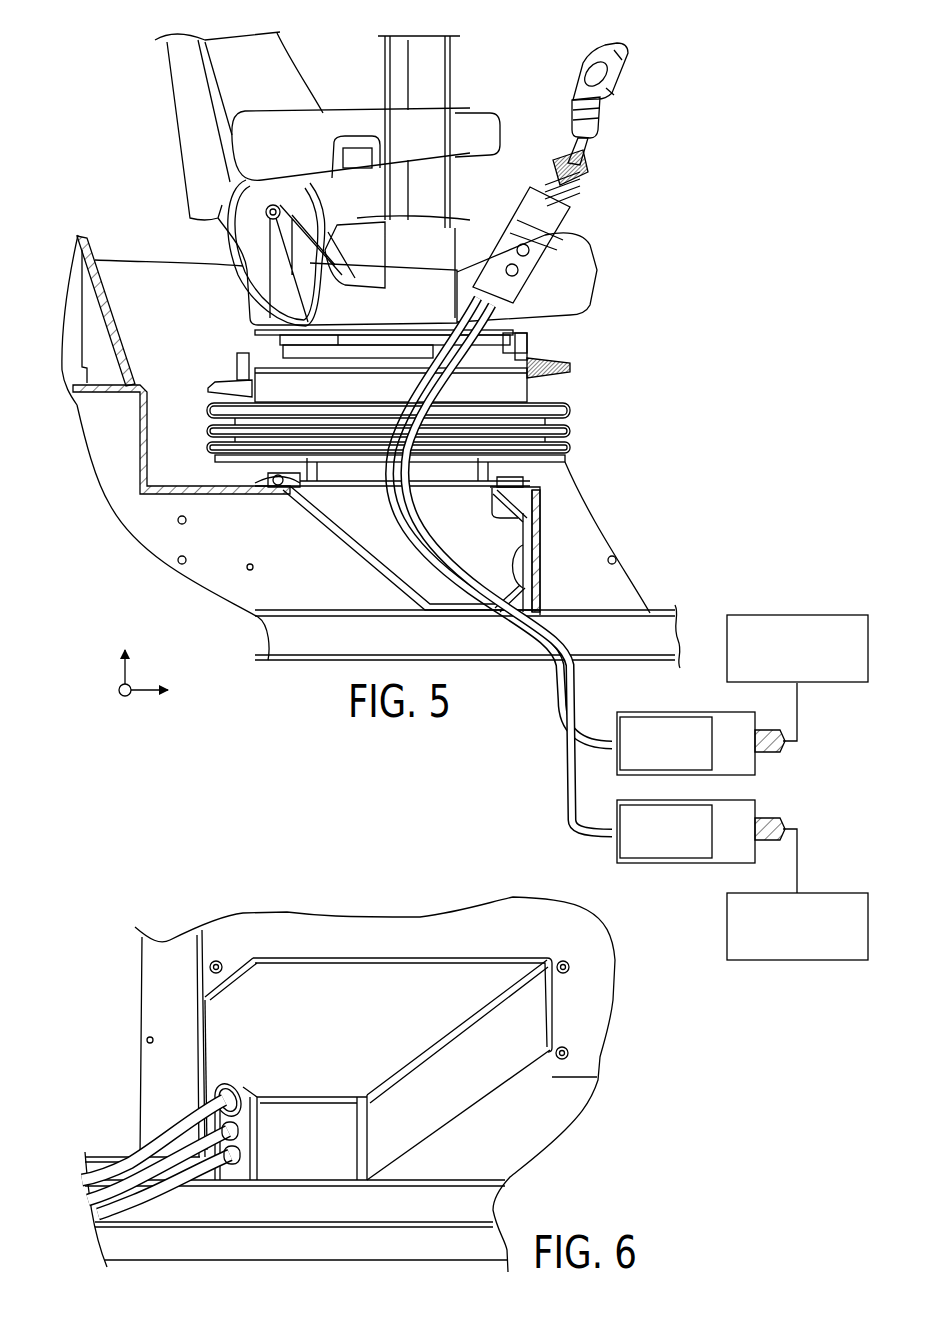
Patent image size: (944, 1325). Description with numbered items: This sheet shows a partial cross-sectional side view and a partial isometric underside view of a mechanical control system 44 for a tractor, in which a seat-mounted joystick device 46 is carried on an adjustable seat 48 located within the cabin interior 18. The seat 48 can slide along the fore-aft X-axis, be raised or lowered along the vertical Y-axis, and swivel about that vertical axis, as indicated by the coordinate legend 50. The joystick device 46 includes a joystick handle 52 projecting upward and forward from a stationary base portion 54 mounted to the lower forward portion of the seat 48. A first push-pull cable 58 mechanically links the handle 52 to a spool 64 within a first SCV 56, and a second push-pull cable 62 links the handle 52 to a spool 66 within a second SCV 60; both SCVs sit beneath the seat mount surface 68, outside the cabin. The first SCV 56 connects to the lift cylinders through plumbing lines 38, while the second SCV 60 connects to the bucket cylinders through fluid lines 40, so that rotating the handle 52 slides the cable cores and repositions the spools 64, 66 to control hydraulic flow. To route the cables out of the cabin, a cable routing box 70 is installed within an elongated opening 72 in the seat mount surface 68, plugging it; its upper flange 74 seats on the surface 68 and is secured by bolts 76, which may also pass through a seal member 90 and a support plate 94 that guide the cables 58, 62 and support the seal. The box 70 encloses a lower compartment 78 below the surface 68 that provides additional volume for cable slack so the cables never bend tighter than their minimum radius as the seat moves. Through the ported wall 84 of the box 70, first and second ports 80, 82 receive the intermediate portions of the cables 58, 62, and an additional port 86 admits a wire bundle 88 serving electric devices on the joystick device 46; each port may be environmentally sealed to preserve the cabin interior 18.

In FIG. 5, the cabin interior 18 is at (161, 227).
In FIG. 5, the plumbing lines 38 is at (768, 753).
In FIG. 5, the fluid lines 40 is at (770, 822).
In FIG. 5, the mechanical control system 44 is at (658, 458).
In FIG. 5, the seat-mounted joystick device 46 is at (645, 42).
In FIG. 5, the adjustable seat 48 is at (272, 82).
In FIG. 5, the coordinate legend 50 is at (127, 670).
In FIG. 5, the joystick handle 52 is at (575, 100).
In FIG. 5, the stationary base portion 54 is at (575, 218).
In FIG. 5, the first SCV 56 is at (735, 712).
In FIG. 5, the first push-pull cable 58 is at (415, 388).
In FIG. 6, the first push-pull cable 58 is at (125, 1180).
In FIG. 5, the second SCV 60 is at (727, 865).
In FIG. 5, the second push-pull cable 62 is at (450, 383).
In FIG. 6, the second push-pull cable 62 is at (165, 1187).
In FIG. 5, the spool 64 is at (672, 716).
In FIG. 5, the spool 66 is at (670, 860).
In FIG. 5, the seat mount surface 68 is at (187, 487).
In FIG. 5, the cable routing box 70 is at (366, 579).
In FIG. 6, the cable routing box 70 is at (444, 1097).
In FIG. 5, the opening 72 is at (457, 498).
In FIG. 5, the upper flange 74 is at (243, 485).
In FIG. 5, the bolts 76 is at (280, 497).
In FIG. 5, the lower compartment 78 is at (457, 598).
In FIG. 6, the first port 80 is at (240, 1131).
In FIG. 5, the second port 82 is at (500, 587).
In FIG. 6, the second port 82 is at (242, 1160).
In FIG. 5, the ported wall 84 is at (518, 565).
In FIG. 6, the ported wall 84 is at (210, 1080).
In FIG. 6, the additional port 86 is at (232, 1093).
In FIG. 6, the wire bundle 88 is at (182, 1135).
In FIG. 5, the seal member 90 is at (297, 480).
In FIG. 5, the support plate 94 is at (520, 514).